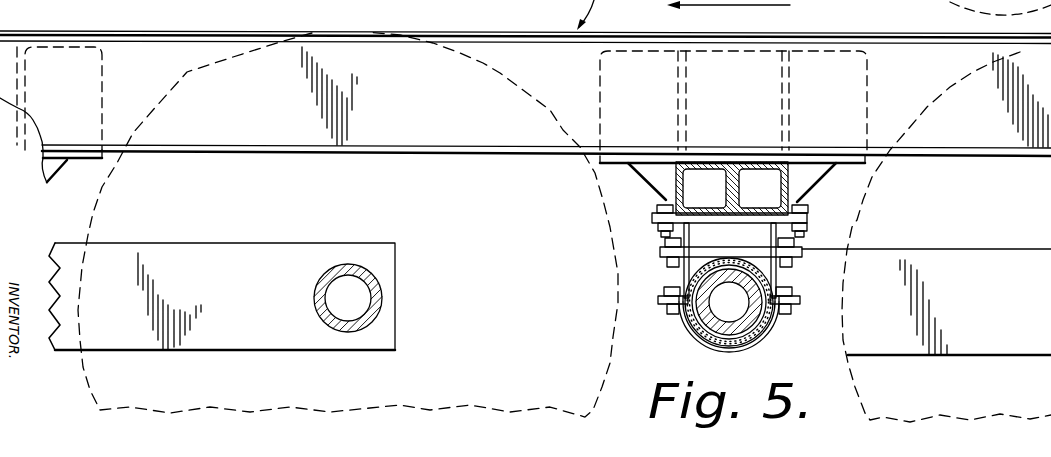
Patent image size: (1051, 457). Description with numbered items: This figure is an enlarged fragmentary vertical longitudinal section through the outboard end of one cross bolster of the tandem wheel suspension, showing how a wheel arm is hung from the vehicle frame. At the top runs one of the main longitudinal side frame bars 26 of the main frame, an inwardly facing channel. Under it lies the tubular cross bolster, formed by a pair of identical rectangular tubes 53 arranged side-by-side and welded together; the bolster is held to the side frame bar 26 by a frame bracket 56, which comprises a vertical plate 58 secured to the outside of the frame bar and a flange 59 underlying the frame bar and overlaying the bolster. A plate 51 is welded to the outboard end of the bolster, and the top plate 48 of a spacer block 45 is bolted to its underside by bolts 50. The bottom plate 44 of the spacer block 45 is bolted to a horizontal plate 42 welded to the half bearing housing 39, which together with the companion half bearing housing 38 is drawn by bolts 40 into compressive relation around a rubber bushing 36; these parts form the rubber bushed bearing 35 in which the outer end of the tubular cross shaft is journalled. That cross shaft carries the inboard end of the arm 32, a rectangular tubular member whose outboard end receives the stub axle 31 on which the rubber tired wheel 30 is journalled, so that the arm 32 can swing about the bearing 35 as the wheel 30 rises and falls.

The main longitudinal side frame bar 26 is at (882, 50).
The rubber tired wheel 30 is at (90, 224).
The stub axle 31 is at (377, 310).
The arm 32 is at (250, 255).
The bearing 35 is at (755, 356).
The rubber bushing 36 is at (770, 332).
The half bearing housing 38 is at (691, 336).
The half bearing housing 39 is at (688, 278).
The bolts 40 is at (672, 315).
The horizontal plate 42 is at (658, 253).
The bottom plate 44 is at (660, 250).
The spacer block 45 is at (720, 232).
The top plate 48 is at (808, 225).
The bolts 50 is at (800, 207).
The plate 51 is at (802, 225).
The tubes 53 is at (752, 162).
The frame bracket 56 is at (112, 94).
The vertical plate 58 is at (751, 51).
The flange 59 is at (87, 160).